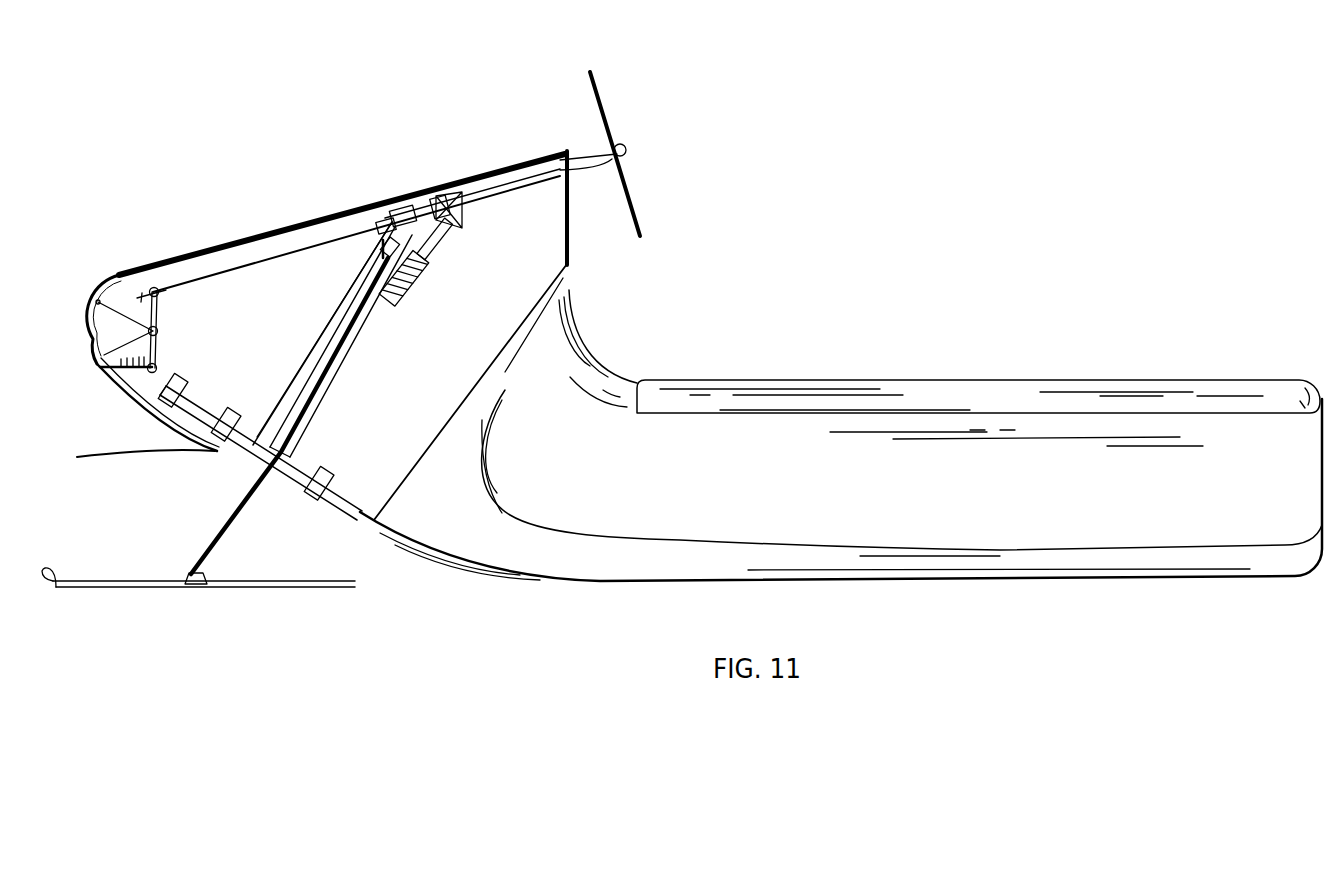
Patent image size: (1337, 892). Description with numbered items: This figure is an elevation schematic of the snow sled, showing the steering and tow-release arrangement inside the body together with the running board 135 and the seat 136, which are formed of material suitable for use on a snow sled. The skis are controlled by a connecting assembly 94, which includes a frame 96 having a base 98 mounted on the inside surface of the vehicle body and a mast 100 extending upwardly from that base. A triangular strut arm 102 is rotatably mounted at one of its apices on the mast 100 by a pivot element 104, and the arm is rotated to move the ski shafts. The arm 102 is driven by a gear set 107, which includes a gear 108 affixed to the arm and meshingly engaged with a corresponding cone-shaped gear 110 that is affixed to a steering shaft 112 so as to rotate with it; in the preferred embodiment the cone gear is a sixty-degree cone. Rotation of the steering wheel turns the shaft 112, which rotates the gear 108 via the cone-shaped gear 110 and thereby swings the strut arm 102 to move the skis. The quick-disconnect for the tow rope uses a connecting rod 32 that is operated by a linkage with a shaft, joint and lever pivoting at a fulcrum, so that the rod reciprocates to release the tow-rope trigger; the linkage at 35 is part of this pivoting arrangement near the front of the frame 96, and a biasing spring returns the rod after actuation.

The connecting rod 32 is at (92, 360).
The pivot linkage 35 is at (154, 283).
The connecting assembly 94 is at (344, 330).
The frame 96 is at (320, 342).
The base 98 is at (293, 475).
The mast 100 is at (297, 383).
The triangular strut arm 102 is at (390, 302).
The pivot element 104 is at (418, 262).
The gear set 107 is at (400, 205).
The gear 108 is at (440, 226).
The cone-shaped gear 110 is at (440, 198).
The steering shaft 112 is at (503, 181).
The running board 135 is at (957, 533).
The seat 136 is at (932, 380).